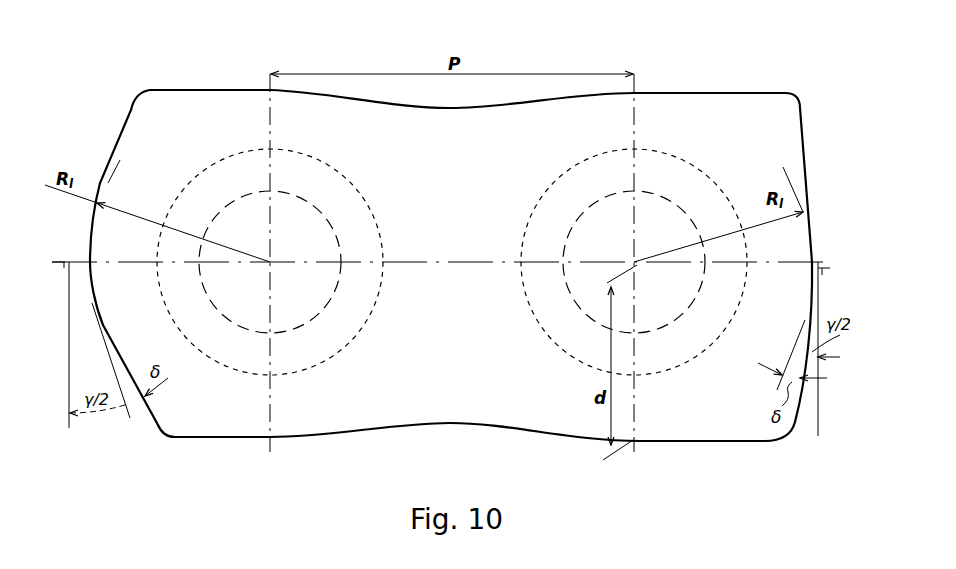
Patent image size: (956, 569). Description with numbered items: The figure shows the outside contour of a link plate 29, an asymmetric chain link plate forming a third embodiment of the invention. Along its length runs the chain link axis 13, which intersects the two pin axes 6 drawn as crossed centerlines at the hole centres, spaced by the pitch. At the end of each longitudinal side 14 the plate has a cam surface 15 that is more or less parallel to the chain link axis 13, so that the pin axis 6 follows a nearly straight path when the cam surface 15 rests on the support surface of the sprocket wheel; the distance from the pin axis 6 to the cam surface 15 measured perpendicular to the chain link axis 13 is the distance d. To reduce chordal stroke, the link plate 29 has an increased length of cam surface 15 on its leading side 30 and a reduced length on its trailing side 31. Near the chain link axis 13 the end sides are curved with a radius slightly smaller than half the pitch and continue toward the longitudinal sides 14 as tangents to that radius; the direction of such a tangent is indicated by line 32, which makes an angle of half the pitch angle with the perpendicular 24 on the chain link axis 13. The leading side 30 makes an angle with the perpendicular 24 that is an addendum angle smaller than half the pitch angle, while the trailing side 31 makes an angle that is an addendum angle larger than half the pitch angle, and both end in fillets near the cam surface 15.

The pin axis 6 is at (268, 260).
The chain link axis 13 is at (430, 258).
The longitudinal side 14 is at (429, 427).
The cam surface 15 is at (212, 440).
The perpendicular on the chain link axis 24 is at (818, 428).
The link plate 29 is at (748, 108).
The leading side 30 is at (803, 137).
The trailing side 31 is at (122, 130).
The line 32 is at (112, 352).